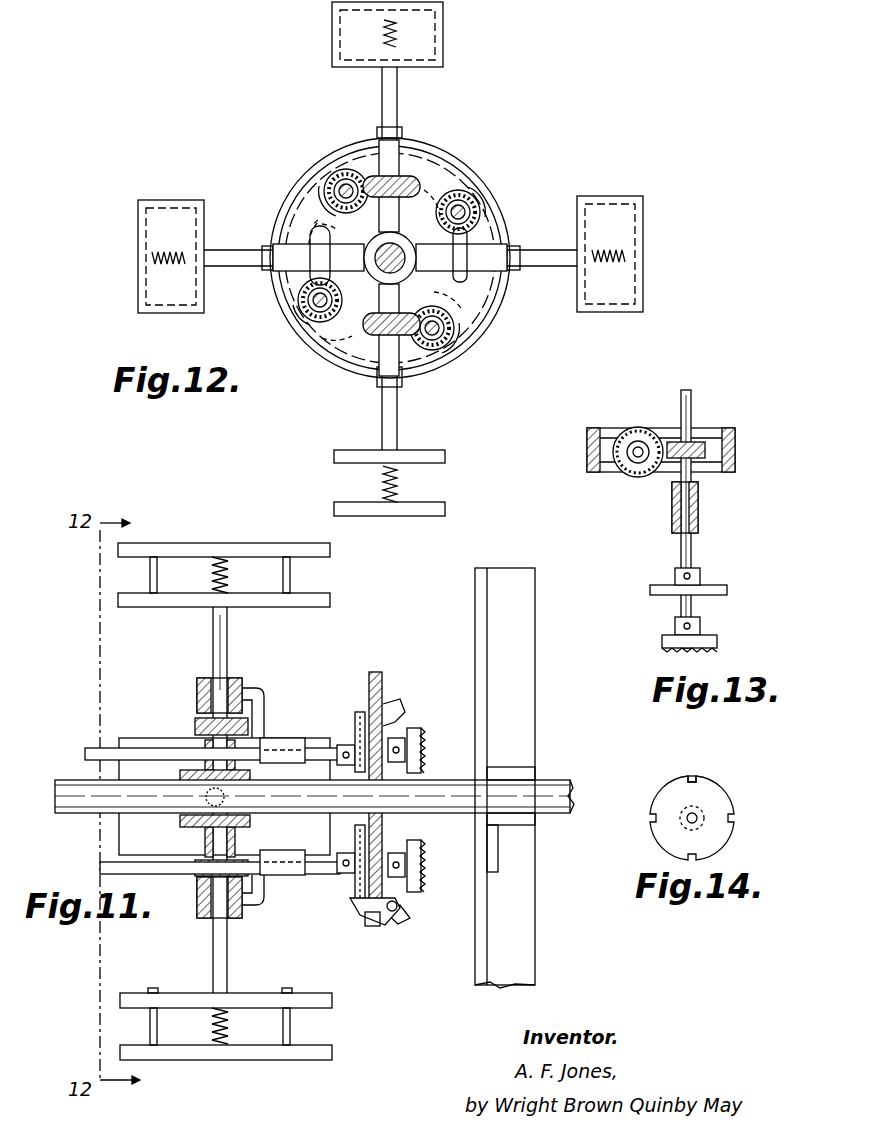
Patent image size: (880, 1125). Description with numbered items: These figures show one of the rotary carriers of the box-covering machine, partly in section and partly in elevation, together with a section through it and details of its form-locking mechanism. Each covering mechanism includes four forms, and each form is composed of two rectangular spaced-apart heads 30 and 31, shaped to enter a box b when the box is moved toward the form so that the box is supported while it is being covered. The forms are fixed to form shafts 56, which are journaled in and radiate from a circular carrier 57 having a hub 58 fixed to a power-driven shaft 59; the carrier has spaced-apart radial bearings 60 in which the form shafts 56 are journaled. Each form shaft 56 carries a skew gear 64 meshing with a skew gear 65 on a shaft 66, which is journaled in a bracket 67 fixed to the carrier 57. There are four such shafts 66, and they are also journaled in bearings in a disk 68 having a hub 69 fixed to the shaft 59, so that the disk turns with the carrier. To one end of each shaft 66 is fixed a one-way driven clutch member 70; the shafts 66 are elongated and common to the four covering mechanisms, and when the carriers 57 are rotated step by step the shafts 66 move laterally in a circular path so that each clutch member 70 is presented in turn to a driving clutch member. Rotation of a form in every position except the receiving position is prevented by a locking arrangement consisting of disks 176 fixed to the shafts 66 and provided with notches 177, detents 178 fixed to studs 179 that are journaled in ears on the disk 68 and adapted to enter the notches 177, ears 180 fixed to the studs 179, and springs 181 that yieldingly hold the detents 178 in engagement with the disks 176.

In FIG. 12, the head 30 is at (445, 22).
In FIG. 11, the head 30 is at (198, 545).
In FIG. 12, the head 31 is at (432, 67).
In FIG. 11, the head 31 is at (178, 608).
In FIG. 12, the box b is at (345, 32).
In FIG. 12, the form shaft 56 is at (394, 118).
In FIG. 11, the form shaft 56 is at (230, 650).
In FIG. 13, the form shaft 56 is at (636, 454).
In FIG. 12, the circular carrier 57 is at (484, 330).
In FIG. 11, the circular carrier 57 is at (200, 920).
In FIG. 13, the circular carrier 57 is at (735, 450).
In FIG. 12, the hub 58 is at (404, 271).
In FIG. 11, the hub 58 is at (180, 775).
In FIG. 12, the power-driven shaft 59 is at (379, 267).
In FIG. 11, the power-driven shaft 59 is at (75, 814).
In FIG. 12, the radial bearing 60 is at (402, 160).
In FIG. 11, the radial bearing 60 is at (240, 702).
In FIG. 12, the skew gear 64 is at (385, 176).
In FIG. 11, the skew gear 64 is at (196, 724).
In FIG. 13, the skew gear 64 is at (648, 430).
In FIG. 12, the skew gear 65 is at (327, 186).
In FIG. 13, the skew gear 65 is at (692, 440).
In FIG. 12, the shaft 66 is at (466, 206).
In FIG. 11, the shaft 66 is at (98, 750).
In FIG. 13, the shaft 66 is at (690, 400).
In FIG. 12, the bracket 67 is at (440, 192).
In FIG. 11, the bracket 67 is at (290, 738).
In FIG. 13, the bracket 67 is at (699, 512).
In FIG. 11, the disk 68 is at (383, 686).
In FIG. 11, the hub 69 is at (340, 768).
In FIG. 11, the one-way driven clutch member 70 is at (424, 752).
In FIG. 13, the one-way driven clutch member 70 is at (716, 640).
In FIG. 11, the disk 176 is at (375, 842).
In FIG. 13, the disk 176 is at (722, 588).
In FIG. 14, the disk 176 is at (718, 790).
In FIG. 11, the notch 177 is at (345, 856).
In FIG. 13, the notch 177 is at (682, 598).
In FIG. 14, the notch 177 is at (692, 776).
In FIG. 11, the detent 178 is at (352, 712).
In FIG. 11, the stud 179 is at (398, 704).
In FIG. 11, the ear 180 is at (405, 720).
In FIG. 11, the spring 181 is at (388, 928).